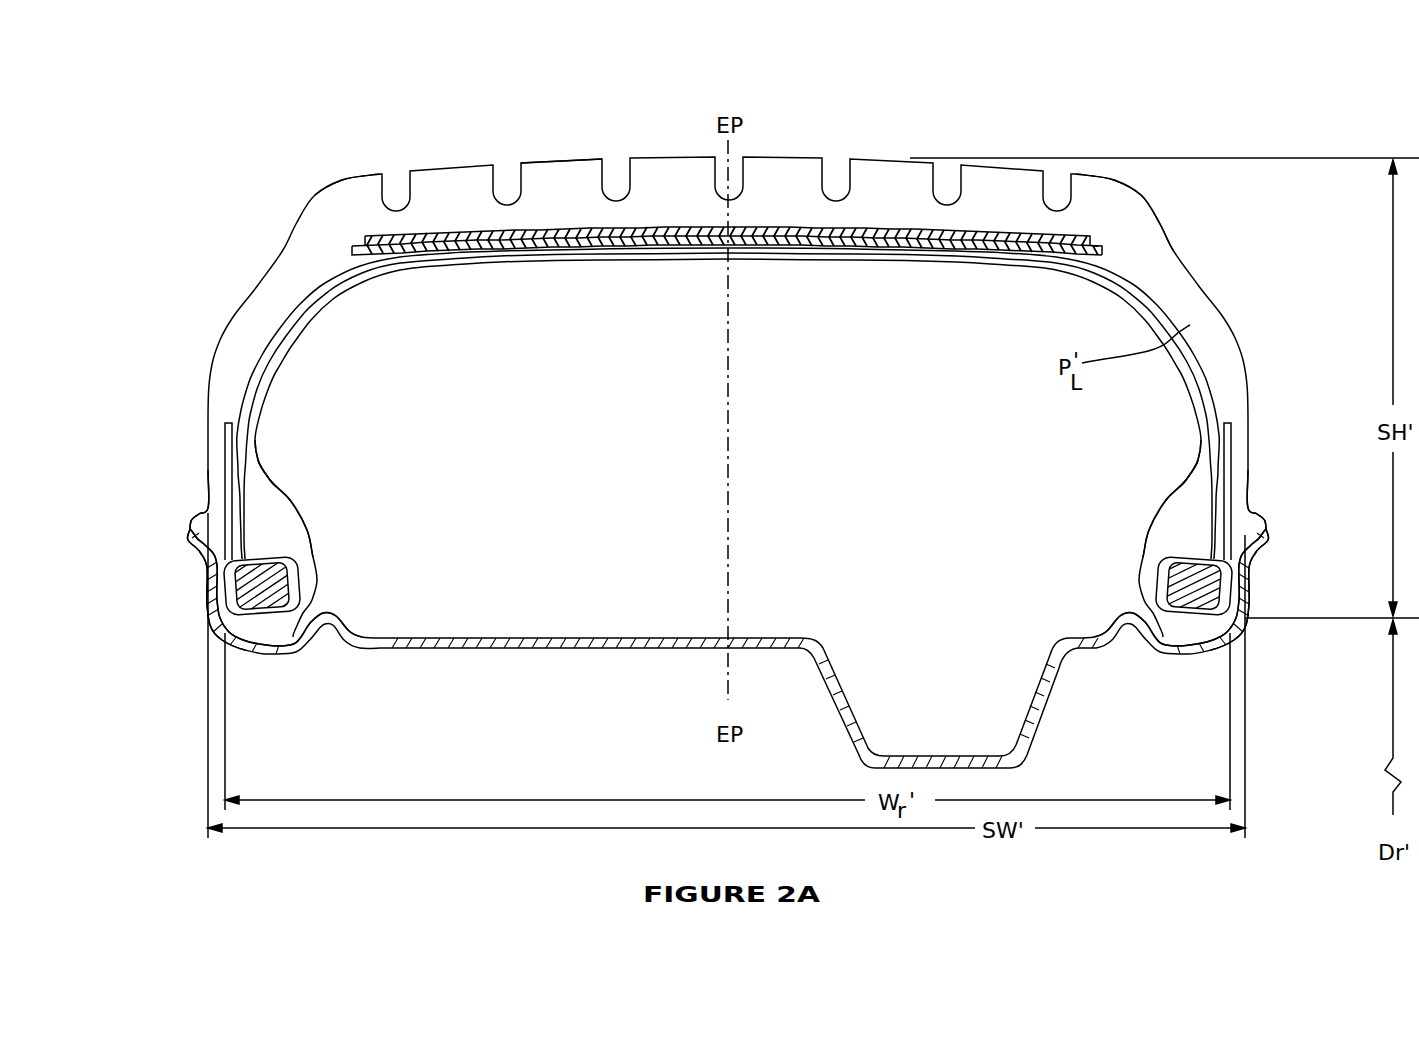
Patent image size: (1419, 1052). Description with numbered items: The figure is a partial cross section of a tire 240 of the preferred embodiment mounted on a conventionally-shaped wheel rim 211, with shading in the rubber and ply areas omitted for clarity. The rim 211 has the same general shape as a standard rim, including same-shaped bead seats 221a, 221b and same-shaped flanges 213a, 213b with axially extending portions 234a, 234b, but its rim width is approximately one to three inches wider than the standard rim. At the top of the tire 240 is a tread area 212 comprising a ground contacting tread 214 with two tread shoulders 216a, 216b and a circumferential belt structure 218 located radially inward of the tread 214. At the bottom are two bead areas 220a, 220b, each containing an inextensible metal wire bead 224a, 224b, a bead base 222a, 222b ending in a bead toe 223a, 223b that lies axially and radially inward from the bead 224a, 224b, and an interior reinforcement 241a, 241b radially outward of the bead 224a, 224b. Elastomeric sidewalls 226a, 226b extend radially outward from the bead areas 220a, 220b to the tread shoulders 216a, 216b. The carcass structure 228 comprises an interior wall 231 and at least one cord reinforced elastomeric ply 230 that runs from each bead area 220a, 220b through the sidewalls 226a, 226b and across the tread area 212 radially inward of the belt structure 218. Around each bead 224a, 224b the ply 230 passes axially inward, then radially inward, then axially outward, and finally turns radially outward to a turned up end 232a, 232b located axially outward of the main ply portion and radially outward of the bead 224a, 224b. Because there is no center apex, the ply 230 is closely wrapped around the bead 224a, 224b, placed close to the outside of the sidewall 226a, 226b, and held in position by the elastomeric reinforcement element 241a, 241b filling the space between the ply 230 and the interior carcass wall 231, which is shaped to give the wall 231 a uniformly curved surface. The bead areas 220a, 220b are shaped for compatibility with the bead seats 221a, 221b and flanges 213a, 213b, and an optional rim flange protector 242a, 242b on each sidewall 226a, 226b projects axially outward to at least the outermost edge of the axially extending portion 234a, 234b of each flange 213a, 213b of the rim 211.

The wheel rim 211 is at (695, 632).
The tread area 212 is at (776, 152).
The rim flange 213a is at (207, 573).
The rim flange 213b is at (1250, 580).
The ground contacting tread 214 is at (586, 157).
The tread shoulder 216a is at (317, 193).
The tread shoulder 216b is at (1130, 186).
The circumferential belt structure 218 is at (703, 247).
The bead area 220a is at (372, 528).
The bead area 220b is at (1060, 531).
The bead seat 221a is at (243, 650).
The bead seat 221b is at (1214, 657).
The bead base 222a is at (255, 632).
The bead base 222b is at (1200, 632).
The bead toe 223a is at (305, 640).
The bead toe 223b is at (1160, 630).
The bead 224a is at (273, 587).
The bead 224b is at (1177, 587).
The sidewall 226a is at (216, 352).
The sidewall 226b is at (1236, 345).
The carcass structure 228 is at (298, 331).
The cord reinforced elastomeric ply 230 is at (256, 363).
The interior wall 231 is at (280, 500).
The turned up end 232a is at (210, 415).
The turned up end 232b is at (1227, 420).
The axially extending portion 234a is at (190, 530).
The axially extending portion 234b is at (1267, 530).
The tire 240 is at (1258, 271).
The interior reinforcement 241a is at (262, 498).
The interior reinforcement 241b is at (1178, 540).
The rim flange protector 242a is at (194, 508).
The rim flange protector 242b is at (1262, 510).